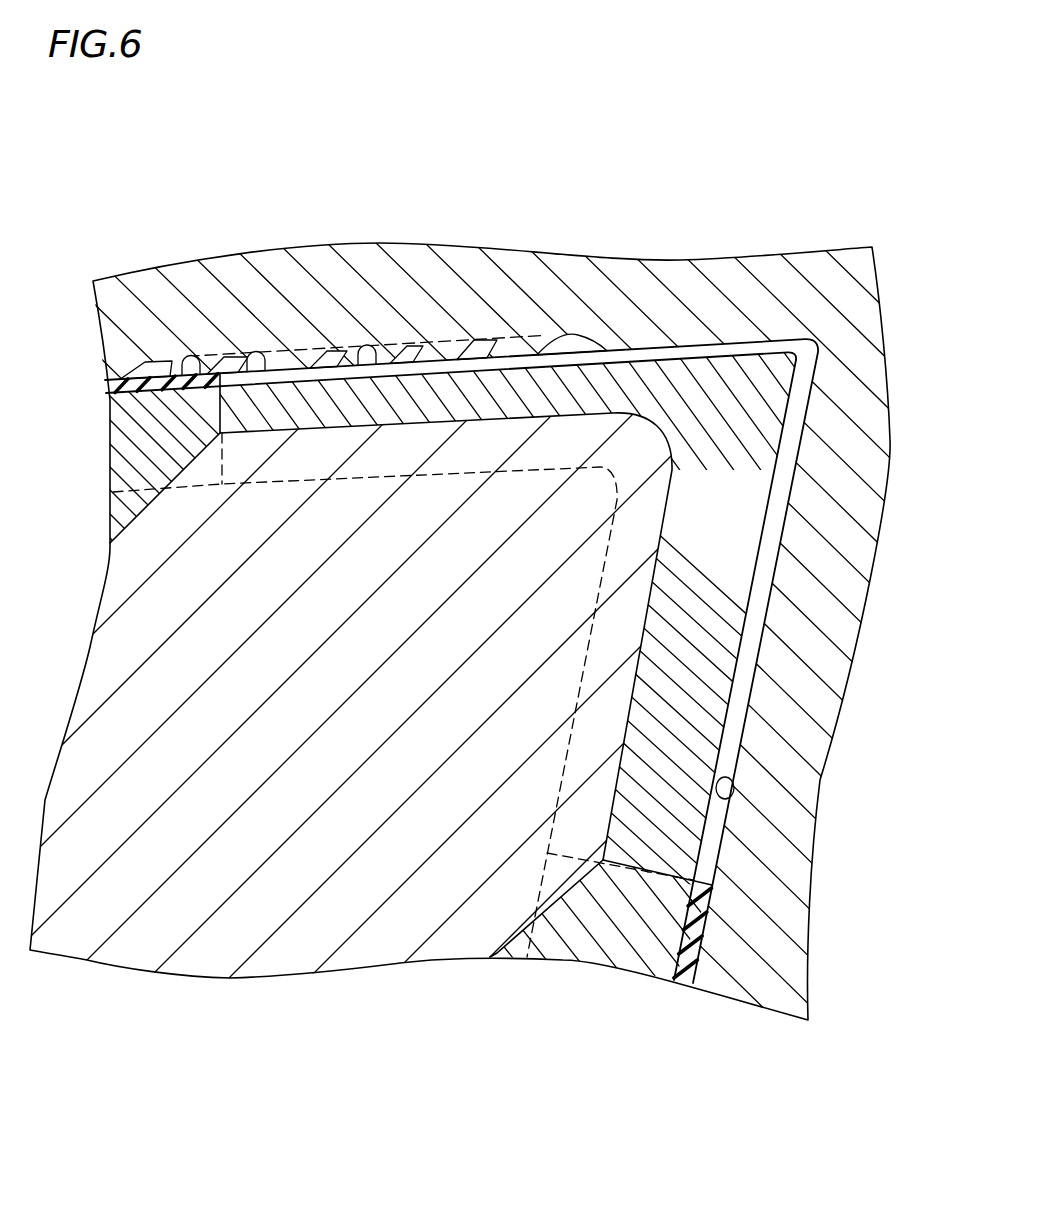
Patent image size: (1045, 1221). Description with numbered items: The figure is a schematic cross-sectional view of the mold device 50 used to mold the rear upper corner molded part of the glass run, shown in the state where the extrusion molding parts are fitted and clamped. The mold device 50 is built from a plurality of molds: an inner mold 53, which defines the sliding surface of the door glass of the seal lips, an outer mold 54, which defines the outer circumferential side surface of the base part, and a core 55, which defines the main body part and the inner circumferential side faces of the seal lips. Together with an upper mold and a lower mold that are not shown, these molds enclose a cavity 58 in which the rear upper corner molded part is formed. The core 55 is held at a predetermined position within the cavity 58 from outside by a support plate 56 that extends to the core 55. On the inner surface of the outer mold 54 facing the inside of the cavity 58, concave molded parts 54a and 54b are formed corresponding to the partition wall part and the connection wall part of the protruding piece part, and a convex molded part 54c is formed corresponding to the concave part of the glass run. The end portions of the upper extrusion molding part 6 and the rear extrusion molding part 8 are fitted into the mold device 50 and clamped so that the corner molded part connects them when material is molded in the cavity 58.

The mold device 50 is at (504, 178).
The inner mold 53 is at (372, 968).
The outer mold 54 is at (846, 682).
The concave molded part 54a is at (258, 357).
The concave molded part 54b is at (368, 352).
The convex molded part 54c is at (183, 358).
The core 55 is at (757, 574).
The support plate 56 is at (118, 507).
The cavity 58 is at (738, 786).
The upper extrusion molding part 6 is at (106, 396).
The rear extrusion molding part 8 is at (688, 987).